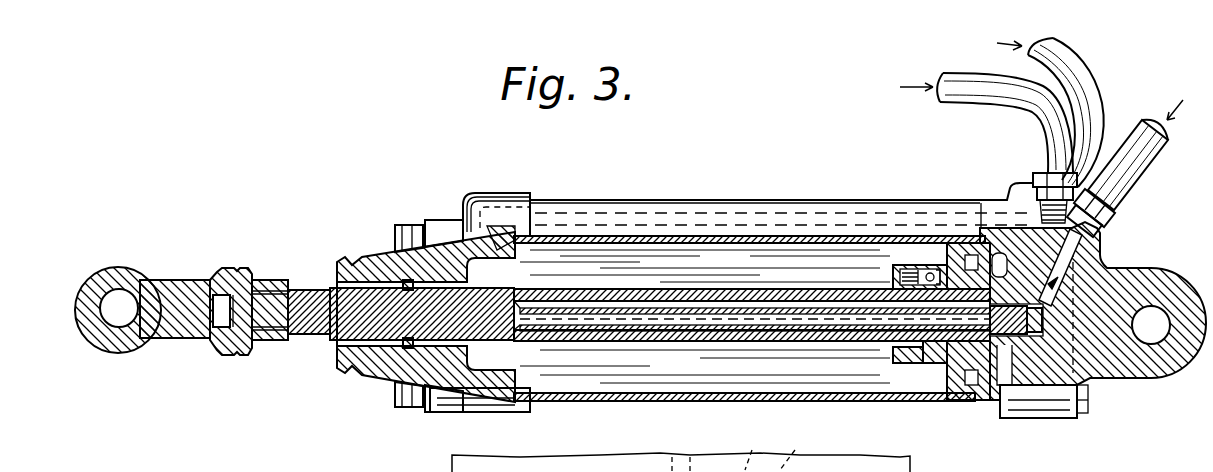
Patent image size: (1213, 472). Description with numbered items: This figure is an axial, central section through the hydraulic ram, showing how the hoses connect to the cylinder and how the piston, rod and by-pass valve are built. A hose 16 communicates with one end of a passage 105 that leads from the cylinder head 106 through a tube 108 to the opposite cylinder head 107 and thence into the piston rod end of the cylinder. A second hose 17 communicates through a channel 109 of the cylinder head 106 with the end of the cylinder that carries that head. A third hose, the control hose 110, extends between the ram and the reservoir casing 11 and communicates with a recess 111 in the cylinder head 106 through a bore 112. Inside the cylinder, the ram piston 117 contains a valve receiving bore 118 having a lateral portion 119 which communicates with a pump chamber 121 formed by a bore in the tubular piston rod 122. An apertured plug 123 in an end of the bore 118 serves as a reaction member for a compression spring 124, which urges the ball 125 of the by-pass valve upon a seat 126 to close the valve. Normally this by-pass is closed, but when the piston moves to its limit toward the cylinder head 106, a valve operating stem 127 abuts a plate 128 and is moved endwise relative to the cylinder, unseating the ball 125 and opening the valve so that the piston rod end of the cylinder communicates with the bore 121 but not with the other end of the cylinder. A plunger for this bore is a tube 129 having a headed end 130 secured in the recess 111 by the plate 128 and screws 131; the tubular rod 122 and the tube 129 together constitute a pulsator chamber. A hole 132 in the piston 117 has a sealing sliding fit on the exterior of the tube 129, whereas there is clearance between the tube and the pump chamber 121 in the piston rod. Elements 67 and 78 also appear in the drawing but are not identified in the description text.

The reservoir casing 11 is at (927, 468).
The hose 16 is at (1087, 77).
The hose 17 is at (978, 98).
The link 67 is at (756, 448).
The link 78 is at (797, 450).
The passage 105 is at (848, 222).
The cylinder head 106 is at (1012, 193).
The cylinder head 107 is at (497, 195).
The tube 108 is at (666, 200).
The channel 109 is at (1028, 252).
The control hose 110 is at (1140, 171).
The recess 111 is at (1042, 320).
The bore 112 is at (1073, 253).
The ram piston 117 is at (925, 401).
The valve receiving bore 118 is at (927, 271).
The lateral portion 119 is at (968, 275).
The pump chamber 121 is at (796, 301).
The piston rod 122 is at (574, 291).
The apertured plug 123 is at (905, 265).
The compression spring 124 is at (912, 265).
The ball 125 is at (912, 320).
The seat 126 is at (938, 270).
The valve operating stem 127 is at (978, 240).
The plate 128 is at (1006, 284).
The tube 129 is at (853, 310).
The headed end 130 is at (1020, 396).
The screws 131 is at (956, 370).
The hole 132 is at (932, 358).